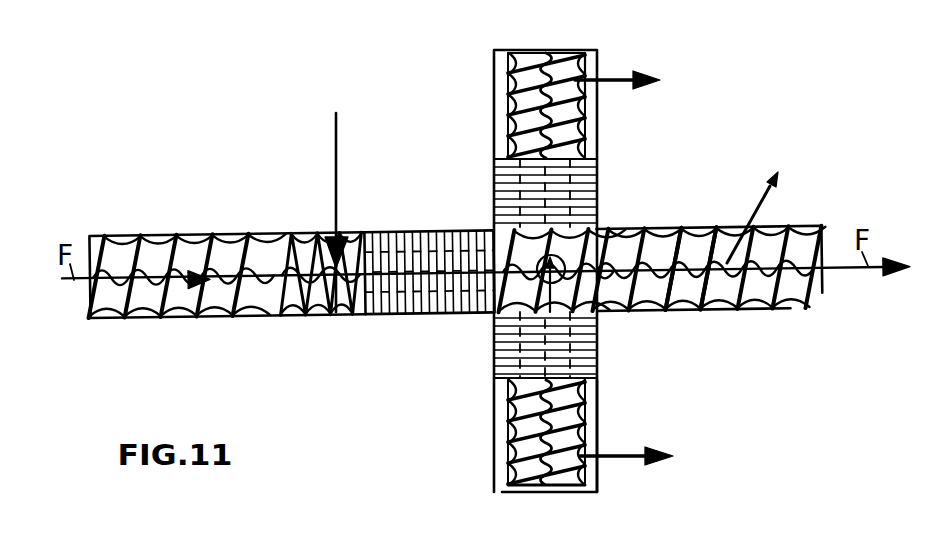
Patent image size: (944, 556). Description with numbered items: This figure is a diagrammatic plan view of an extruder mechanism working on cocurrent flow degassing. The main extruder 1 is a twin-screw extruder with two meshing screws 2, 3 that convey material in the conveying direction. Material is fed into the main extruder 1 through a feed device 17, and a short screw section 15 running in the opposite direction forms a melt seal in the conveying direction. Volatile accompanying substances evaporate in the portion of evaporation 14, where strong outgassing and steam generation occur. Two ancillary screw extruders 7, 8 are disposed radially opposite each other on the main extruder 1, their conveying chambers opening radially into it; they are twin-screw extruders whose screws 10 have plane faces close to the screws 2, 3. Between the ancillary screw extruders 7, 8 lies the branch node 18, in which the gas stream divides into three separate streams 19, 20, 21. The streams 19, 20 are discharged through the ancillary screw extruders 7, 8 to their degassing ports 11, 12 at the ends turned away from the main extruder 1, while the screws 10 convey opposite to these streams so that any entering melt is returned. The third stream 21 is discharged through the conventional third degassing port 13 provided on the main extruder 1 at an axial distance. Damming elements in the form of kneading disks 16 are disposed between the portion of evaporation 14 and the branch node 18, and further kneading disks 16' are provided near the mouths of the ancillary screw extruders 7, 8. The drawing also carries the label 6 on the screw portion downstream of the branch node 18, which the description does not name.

The main extruder 1 is at (272, 325).
The screw 2 is at (792, 245).
The screw 3 is at (795, 304).
The spring coil 6 is at (684, 312).
The ancillary screw extruder 7 is at (599, 52).
The ancillary screw extruder 8 is at (603, 488).
The screws 10 is at (520, 140).
The degassing port 11 is at (546, 60).
The degassing port 12 is at (551, 491).
The third degassing port 13 is at (725, 302).
The portion of evaporation 14 is at (335, 314).
The short screw section 15 is at (292, 235).
The kneading disks 16 is at (429, 298).
The further kneading disks 16' is at (583, 268).
The feed device 17 is at (338, 160).
The branch node 18 is at (496, 314).
The separate stream 19 is at (612, 82).
The separate stream 20 is at (624, 458).
The separate stream 21 is at (750, 222).